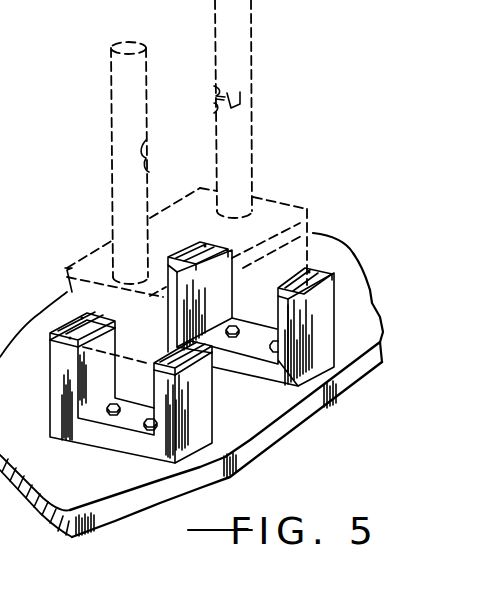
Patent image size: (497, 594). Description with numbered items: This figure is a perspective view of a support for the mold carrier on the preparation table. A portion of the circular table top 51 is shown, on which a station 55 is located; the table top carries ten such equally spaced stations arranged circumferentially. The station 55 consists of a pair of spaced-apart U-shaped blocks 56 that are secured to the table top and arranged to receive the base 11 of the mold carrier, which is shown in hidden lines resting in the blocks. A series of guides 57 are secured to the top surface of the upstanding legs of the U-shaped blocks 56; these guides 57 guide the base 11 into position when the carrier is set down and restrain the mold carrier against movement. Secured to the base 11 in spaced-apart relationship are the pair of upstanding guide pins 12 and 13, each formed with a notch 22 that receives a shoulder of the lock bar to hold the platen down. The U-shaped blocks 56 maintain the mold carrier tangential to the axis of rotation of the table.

The base 11 is at (290, 200).
The guide pin 12 is at (110, 127).
The guide pin 13 is at (262, 56).
The notch 22 is at (150, 158).
The circular table top 51 is at (68, 475).
The station 55 is at (290, 455).
The U-shaped block 56 is at (292, 365).
The guide 57 is at (166, 318).